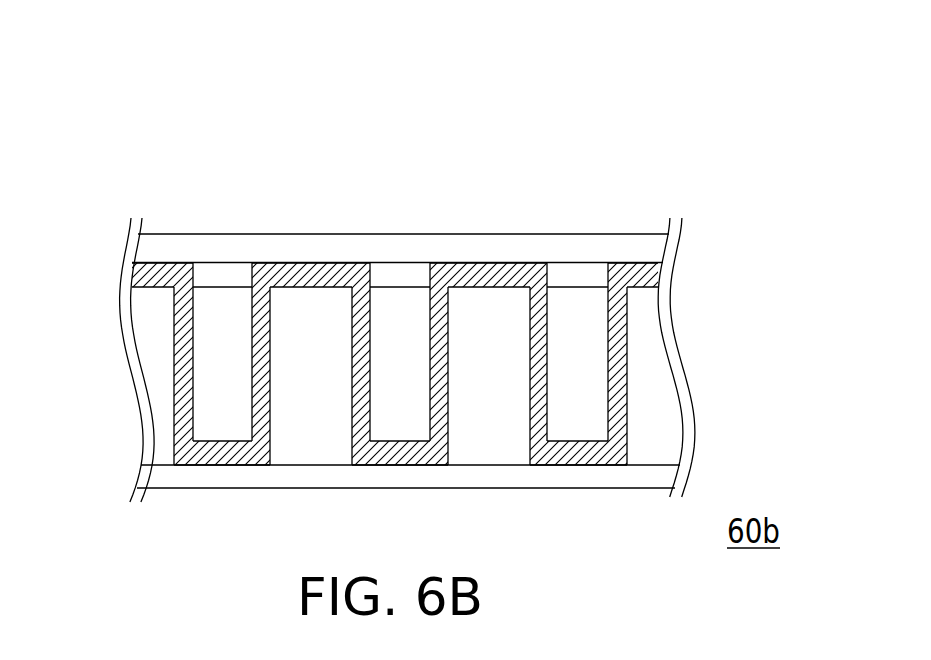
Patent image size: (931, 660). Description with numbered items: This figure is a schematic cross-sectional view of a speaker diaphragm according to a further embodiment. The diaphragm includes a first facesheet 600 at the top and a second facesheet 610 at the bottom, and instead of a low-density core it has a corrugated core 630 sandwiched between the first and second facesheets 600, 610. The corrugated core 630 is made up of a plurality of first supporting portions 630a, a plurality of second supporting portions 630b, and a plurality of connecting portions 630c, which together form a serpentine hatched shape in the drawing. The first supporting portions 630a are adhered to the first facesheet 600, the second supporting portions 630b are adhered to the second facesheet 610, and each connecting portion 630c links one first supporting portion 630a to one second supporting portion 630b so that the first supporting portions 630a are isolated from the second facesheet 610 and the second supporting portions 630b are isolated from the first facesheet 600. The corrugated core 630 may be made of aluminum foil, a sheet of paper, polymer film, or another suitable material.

The first facesheet 600 is at (158, 245).
The second facesheet 610 is at (158, 482).
The corrugated core 630 is at (395, 256).
The first supporting portions 630a is at (298, 273).
The second supporting portions 630b is at (400, 445).
The connecting portions 630c is at (365, 298).